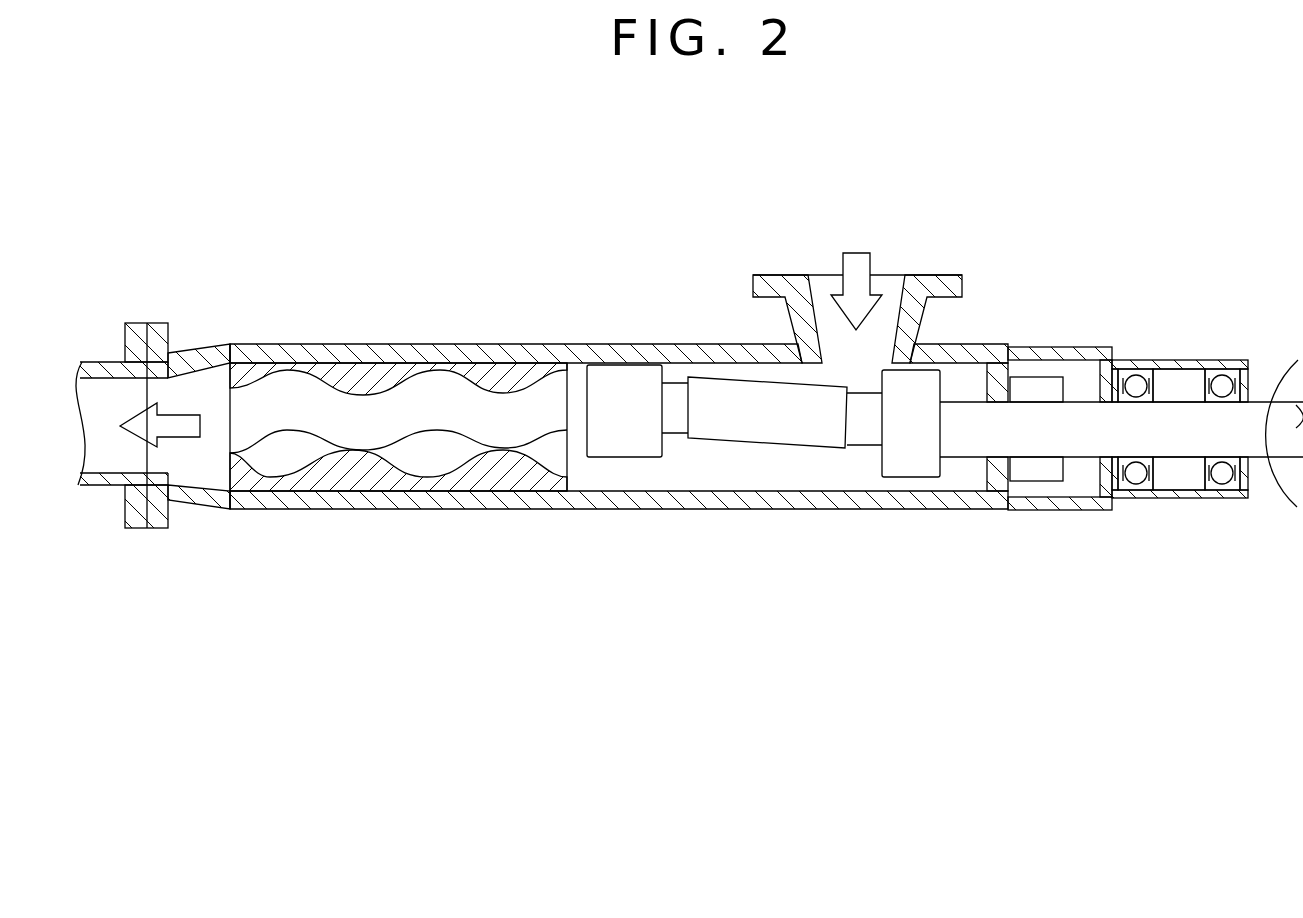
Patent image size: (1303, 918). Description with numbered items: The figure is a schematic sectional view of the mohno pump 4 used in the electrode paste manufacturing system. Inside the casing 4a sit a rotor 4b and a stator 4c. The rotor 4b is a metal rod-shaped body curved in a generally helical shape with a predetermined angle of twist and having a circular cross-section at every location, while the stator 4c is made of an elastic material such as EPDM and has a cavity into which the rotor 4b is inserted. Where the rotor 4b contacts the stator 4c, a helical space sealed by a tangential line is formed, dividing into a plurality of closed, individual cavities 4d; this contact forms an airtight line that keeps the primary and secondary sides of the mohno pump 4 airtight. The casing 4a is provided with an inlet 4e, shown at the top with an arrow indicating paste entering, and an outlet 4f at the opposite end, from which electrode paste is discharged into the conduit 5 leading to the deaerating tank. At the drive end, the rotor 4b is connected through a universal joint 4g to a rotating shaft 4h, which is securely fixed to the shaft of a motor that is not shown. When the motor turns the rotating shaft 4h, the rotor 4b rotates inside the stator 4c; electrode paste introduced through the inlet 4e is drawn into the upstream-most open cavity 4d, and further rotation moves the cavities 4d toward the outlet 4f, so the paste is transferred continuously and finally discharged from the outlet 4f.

The mohno pump 4 is at (714, 443).
The casing 4a is at (692, 493).
The rotor 4b is at (432, 383).
The stator 4c is at (368, 456).
The cavities 4d is at (441, 463).
The inlet 4e is at (808, 288).
The outlet 4f is at (160, 457).
The universal joint 4g is at (625, 458).
The rotating shaft 4h is at (1080, 433).
The conduit 5 is at (103, 505).